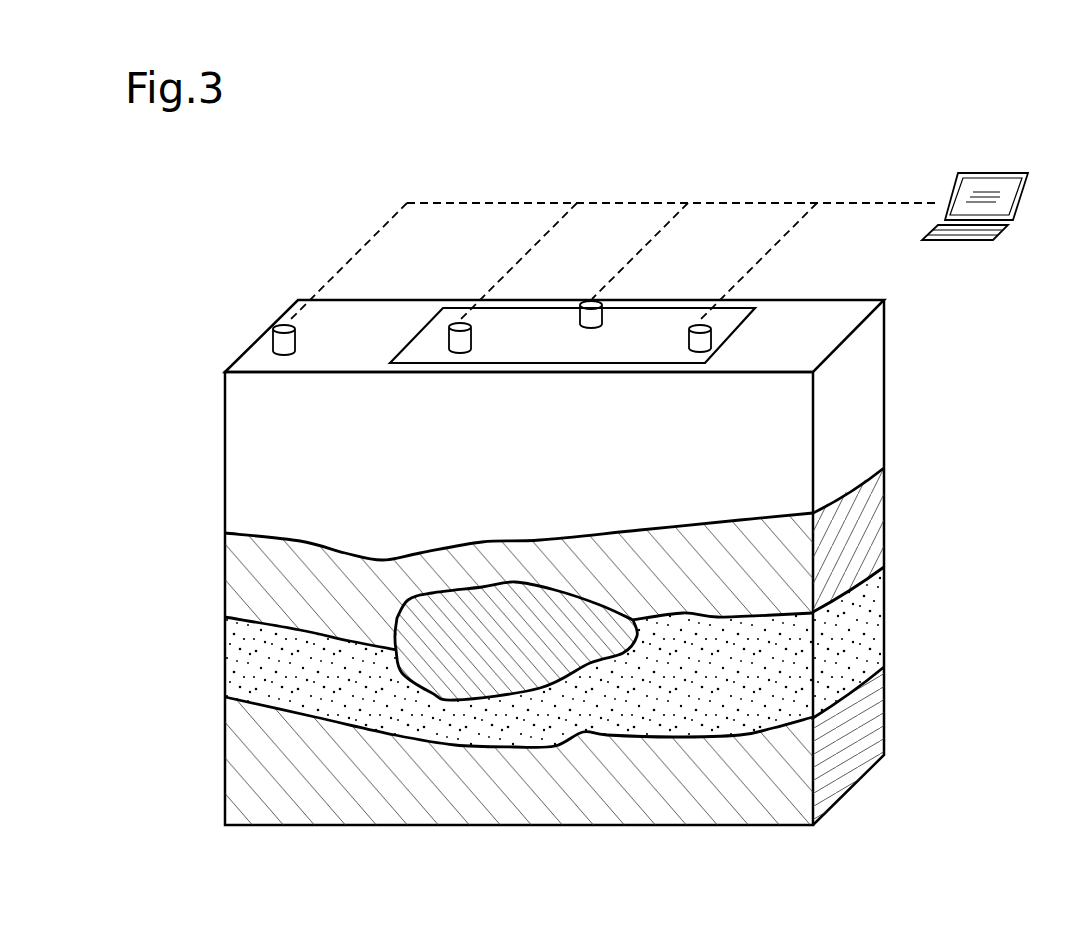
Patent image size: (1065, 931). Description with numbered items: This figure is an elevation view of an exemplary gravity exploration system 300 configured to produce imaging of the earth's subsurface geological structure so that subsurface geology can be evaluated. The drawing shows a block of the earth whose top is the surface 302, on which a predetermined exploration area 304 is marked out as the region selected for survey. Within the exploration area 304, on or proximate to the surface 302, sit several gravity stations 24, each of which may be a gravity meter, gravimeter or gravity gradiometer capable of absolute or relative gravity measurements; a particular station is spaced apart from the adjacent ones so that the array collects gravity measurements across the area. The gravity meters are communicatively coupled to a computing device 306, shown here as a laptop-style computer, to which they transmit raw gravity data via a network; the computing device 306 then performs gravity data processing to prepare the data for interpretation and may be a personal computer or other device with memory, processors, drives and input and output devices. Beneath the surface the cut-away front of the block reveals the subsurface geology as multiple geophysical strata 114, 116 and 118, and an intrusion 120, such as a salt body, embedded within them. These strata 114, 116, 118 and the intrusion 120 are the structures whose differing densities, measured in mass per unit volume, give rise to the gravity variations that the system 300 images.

The gravity exploration system 300 is at (208, 283).
The surface of the earth 302 is at (842, 308).
The exploration area 304 is at (750, 313).
The computing device 306 is at (973, 173).
The gravity station 24 is at (296, 335).
The stratum 114 is at (863, 517).
The stratum 116 is at (863, 633).
The stratum 118 is at (863, 723).
The intrusion 120 is at (396, 618).